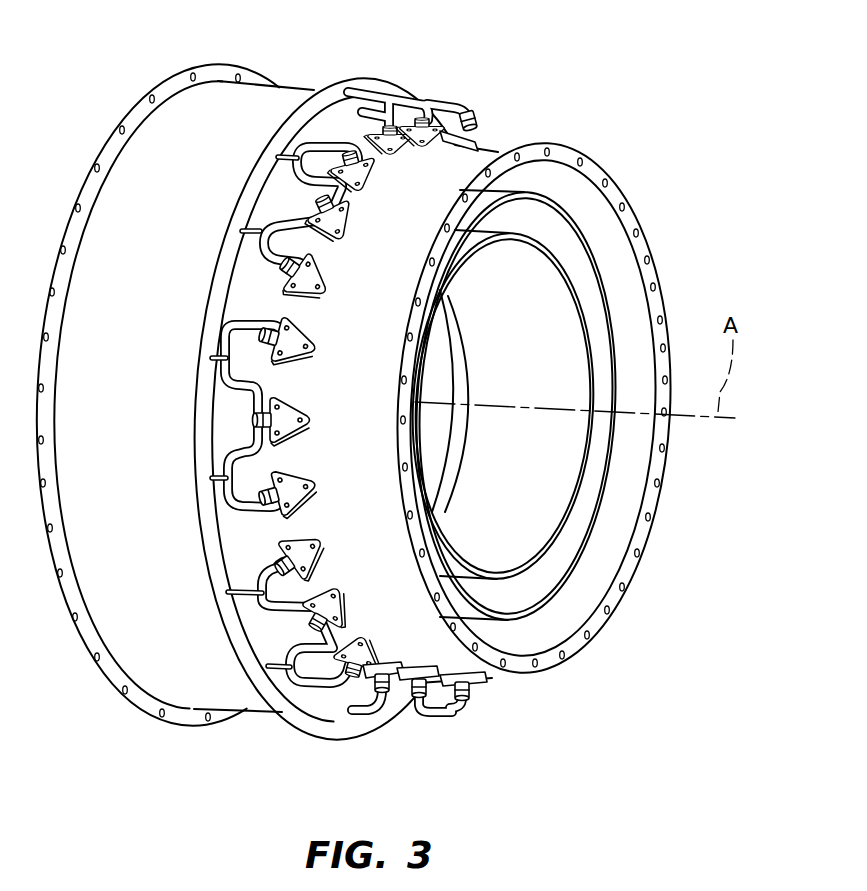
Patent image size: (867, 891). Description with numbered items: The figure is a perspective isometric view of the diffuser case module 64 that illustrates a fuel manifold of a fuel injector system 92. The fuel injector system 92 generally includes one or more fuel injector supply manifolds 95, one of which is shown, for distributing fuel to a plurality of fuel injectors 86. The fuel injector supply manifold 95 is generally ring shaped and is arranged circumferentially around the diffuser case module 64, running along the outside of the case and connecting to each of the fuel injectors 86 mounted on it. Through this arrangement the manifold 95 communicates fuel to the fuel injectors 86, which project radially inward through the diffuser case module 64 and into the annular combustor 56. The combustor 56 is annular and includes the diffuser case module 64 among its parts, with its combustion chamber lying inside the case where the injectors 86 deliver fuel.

The fuel injector system 92 is at (363, 406).
The fuel injector supply manifold 95 is at (322, 142).
The fuel injector 86 is at (447, 141).
The combustor 56 is at (584, 292).
The diffuser case module 64 is at (251, 710).